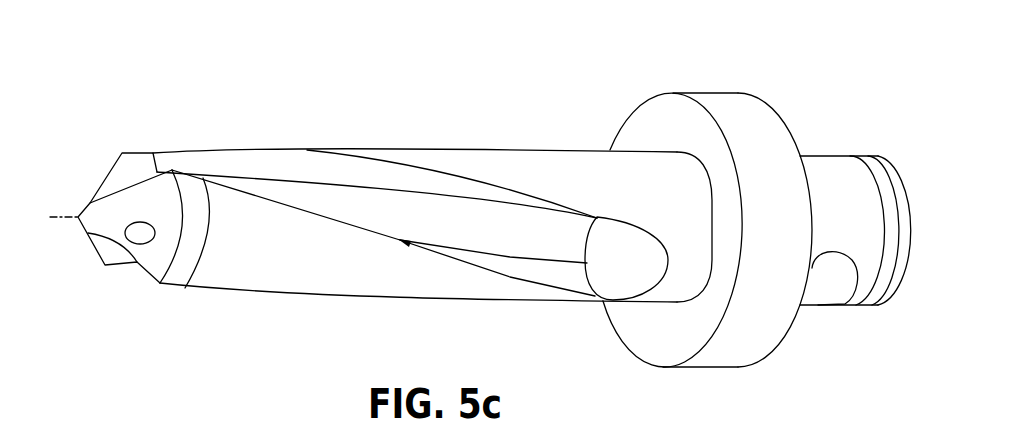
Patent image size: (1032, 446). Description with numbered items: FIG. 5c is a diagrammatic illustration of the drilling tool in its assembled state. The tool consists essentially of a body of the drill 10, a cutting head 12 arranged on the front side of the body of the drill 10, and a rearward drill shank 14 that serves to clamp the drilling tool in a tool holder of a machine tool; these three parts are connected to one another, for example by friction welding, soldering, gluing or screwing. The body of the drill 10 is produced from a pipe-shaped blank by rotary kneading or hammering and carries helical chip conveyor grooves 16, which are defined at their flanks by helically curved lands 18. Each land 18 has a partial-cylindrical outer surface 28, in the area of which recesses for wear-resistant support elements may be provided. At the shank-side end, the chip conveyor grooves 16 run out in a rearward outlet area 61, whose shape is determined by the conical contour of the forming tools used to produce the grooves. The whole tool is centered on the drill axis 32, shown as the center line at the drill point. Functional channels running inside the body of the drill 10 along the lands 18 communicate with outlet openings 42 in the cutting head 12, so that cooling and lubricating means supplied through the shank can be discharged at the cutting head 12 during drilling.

The body of the drill 10 is at (478, 150).
The cutting head 12 is at (142, 163).
The drill shank 14 is at (832, 177).
The conveyor grooves 16 is at (298, 187).
The lands 18 is at (342, 250).
The partial-cylindrical outer surfaces 28 is at (391, 157).
The drill axis 32 is at (61, 207).
The outlet openings 42 is at (141, 236).
The rearward outlet area 61 is at (627, 260).